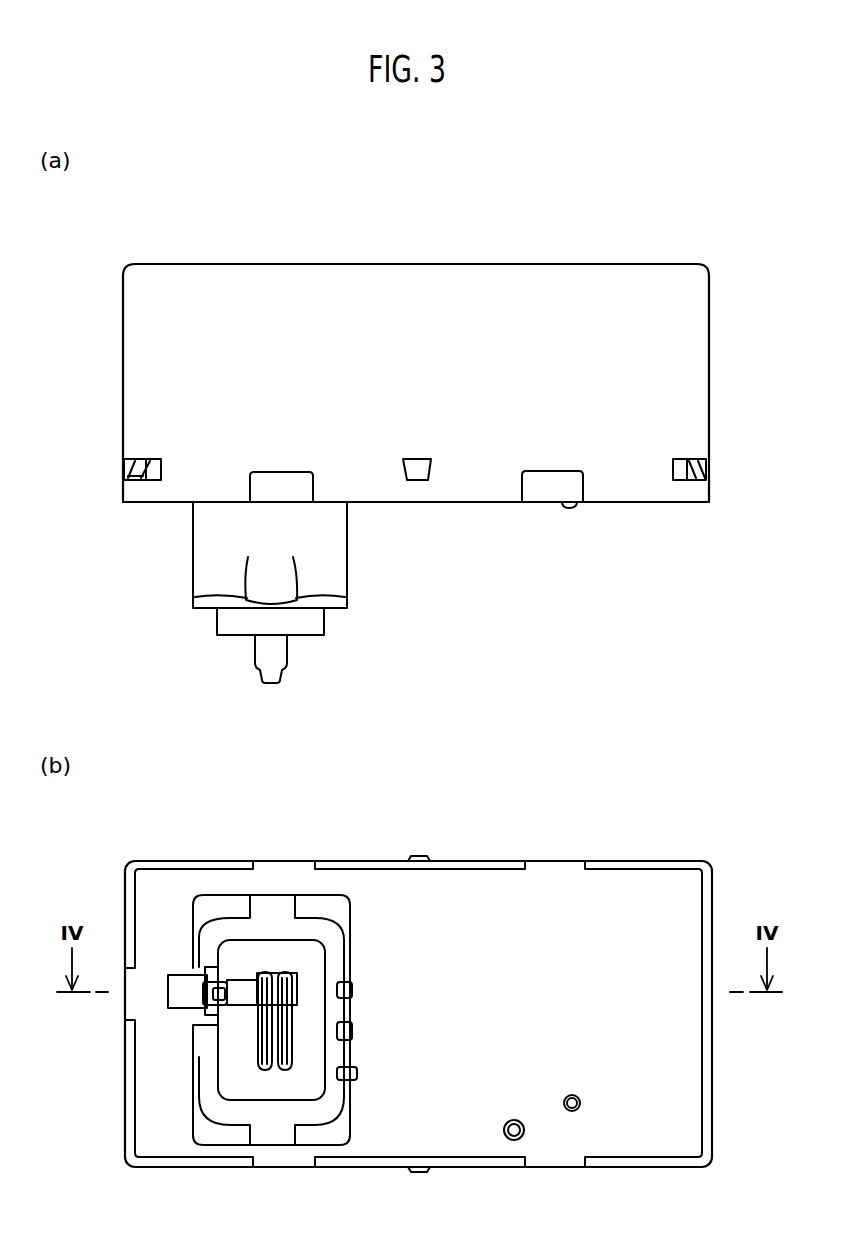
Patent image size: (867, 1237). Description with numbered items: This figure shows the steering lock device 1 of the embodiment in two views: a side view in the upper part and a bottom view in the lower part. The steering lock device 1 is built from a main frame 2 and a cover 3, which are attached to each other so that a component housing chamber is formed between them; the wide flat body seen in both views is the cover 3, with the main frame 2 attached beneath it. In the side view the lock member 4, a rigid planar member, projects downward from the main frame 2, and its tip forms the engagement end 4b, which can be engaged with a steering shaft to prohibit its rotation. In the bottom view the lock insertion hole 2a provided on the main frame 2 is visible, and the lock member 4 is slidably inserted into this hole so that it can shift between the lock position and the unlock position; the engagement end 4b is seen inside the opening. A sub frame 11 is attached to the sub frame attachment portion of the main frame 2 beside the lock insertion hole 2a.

The steering lock device 1 is at (415, 222).
The main frame 2 is at (347, 551).
The lock insertion hole 2a is at (275, 1047).
The cover 3 is at (597, 264).
The lock member 4 is at (288, 651).
The engagement end 4b is at (280, 676).
The sub frame 11 is at (182, 993).